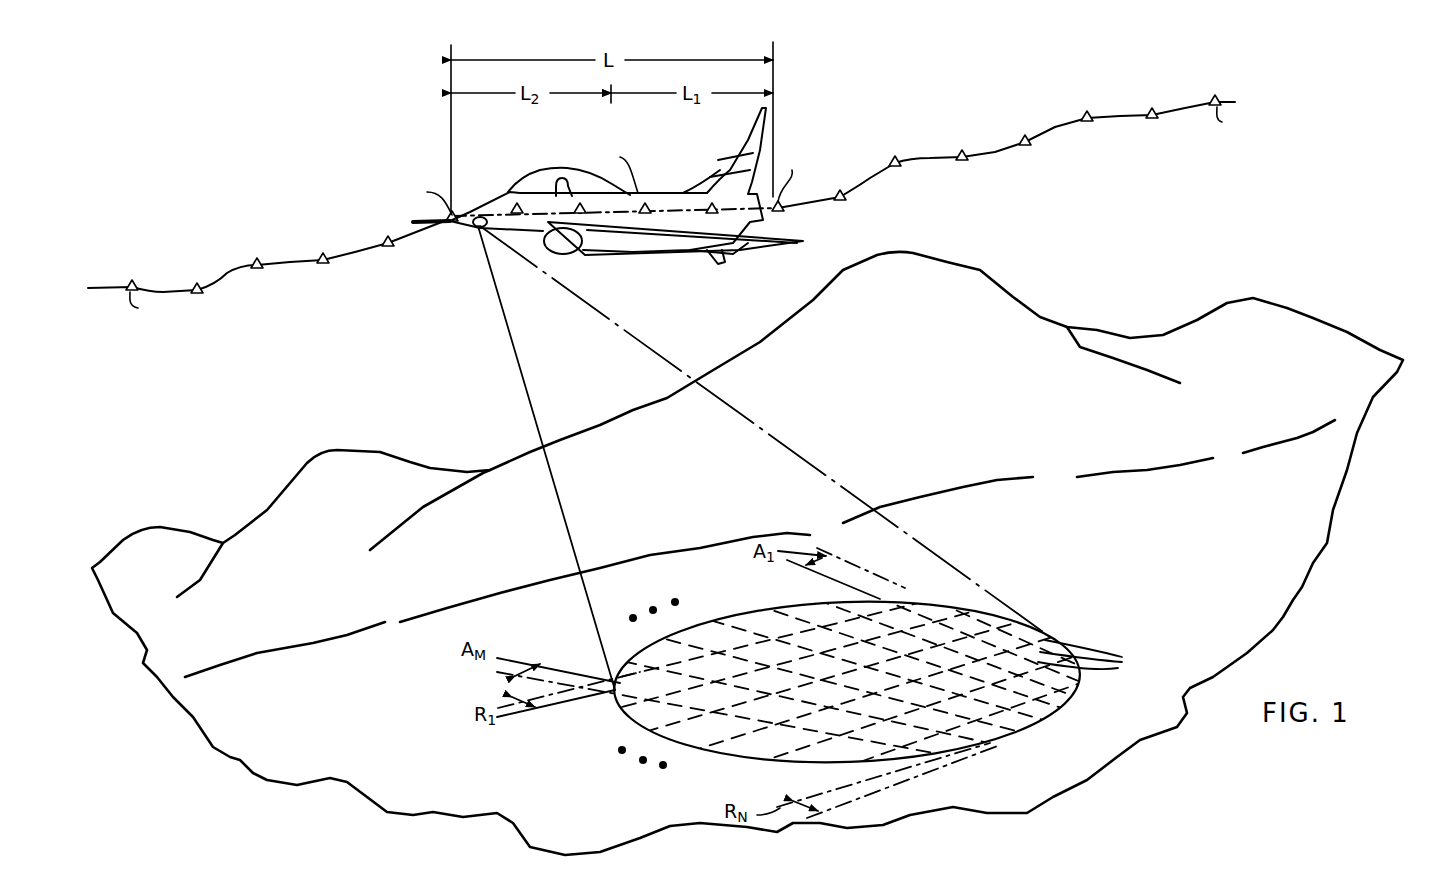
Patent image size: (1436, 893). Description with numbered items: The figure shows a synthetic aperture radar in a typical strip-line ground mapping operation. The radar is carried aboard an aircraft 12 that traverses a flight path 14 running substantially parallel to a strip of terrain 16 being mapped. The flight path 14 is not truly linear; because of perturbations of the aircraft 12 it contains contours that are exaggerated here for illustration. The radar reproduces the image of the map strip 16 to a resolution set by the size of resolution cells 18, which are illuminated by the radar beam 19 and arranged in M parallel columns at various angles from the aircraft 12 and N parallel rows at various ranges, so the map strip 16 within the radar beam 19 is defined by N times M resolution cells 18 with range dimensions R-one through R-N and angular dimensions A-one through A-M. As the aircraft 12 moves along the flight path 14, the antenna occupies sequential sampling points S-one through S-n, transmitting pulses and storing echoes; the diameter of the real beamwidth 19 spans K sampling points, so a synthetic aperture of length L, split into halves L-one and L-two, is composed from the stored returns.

The aircraft 12 is at (650, 200).
The flight path 14 is at (227, 275).
The strip of terrain 16 is at (1067, 703).
The resolution cells 18 is at (1088, 651).
The radar beam 19 is at (773, 437).